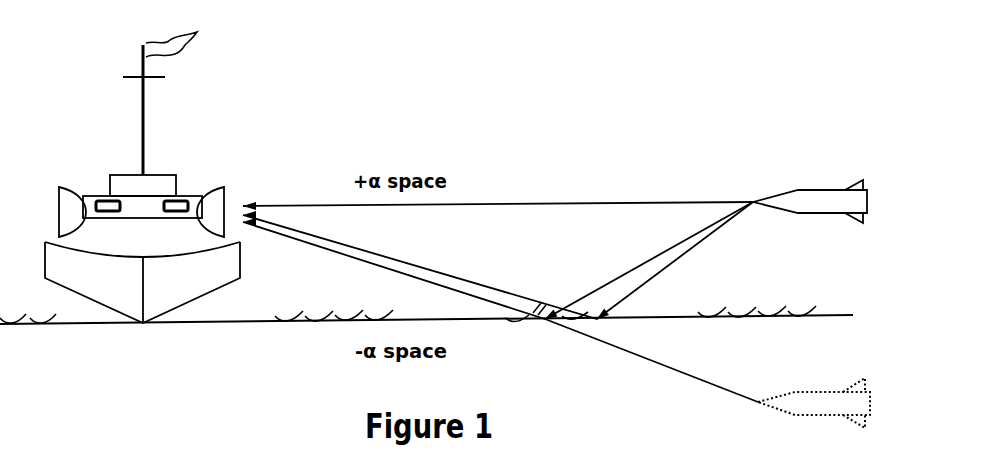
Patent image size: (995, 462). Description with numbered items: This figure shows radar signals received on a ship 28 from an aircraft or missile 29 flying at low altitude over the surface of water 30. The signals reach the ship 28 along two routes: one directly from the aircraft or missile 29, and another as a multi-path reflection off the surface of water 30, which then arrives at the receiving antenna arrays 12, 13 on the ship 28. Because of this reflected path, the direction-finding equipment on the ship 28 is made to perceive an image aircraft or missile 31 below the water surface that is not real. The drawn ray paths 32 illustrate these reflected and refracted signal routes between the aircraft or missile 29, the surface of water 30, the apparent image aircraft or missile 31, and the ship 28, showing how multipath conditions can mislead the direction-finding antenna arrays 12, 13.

The antenna array 12 is at (271, 172).
The antenna array 13 is at (223, 182).
The ship 28 is at (159, 167).
The aircraft or missile 29 is at (810, 188).
The surface of water 30 is at (170, 328).
The image aircraft or missile 31 is at (855, 376).
The multipath reflected signal rays 32 is at (447, 270).